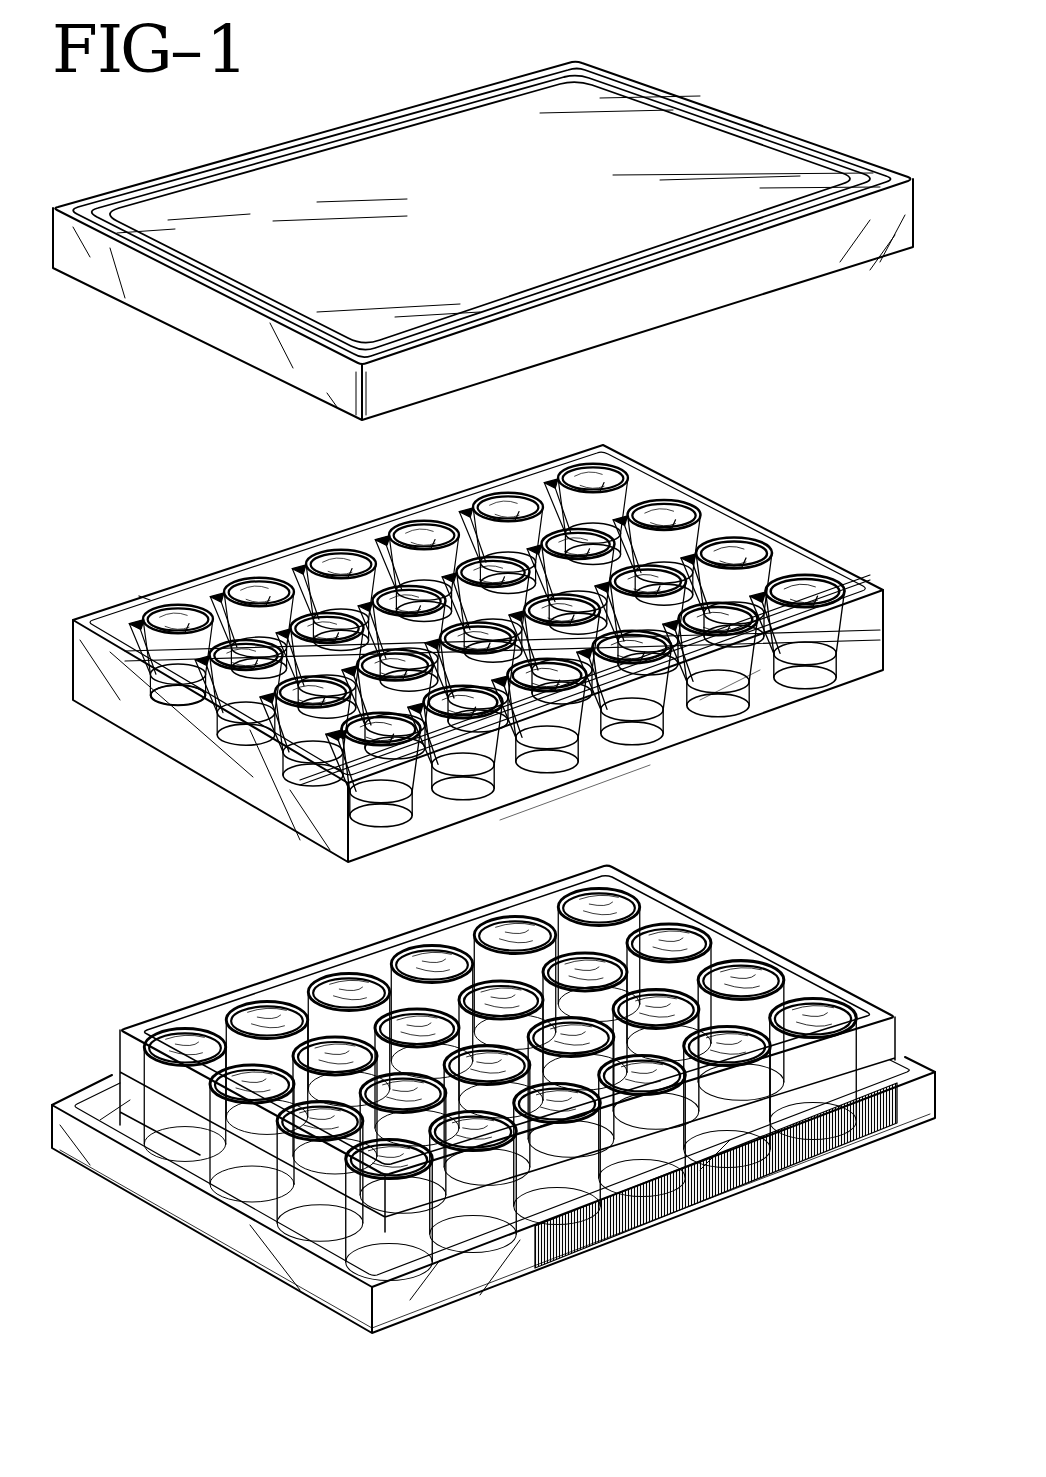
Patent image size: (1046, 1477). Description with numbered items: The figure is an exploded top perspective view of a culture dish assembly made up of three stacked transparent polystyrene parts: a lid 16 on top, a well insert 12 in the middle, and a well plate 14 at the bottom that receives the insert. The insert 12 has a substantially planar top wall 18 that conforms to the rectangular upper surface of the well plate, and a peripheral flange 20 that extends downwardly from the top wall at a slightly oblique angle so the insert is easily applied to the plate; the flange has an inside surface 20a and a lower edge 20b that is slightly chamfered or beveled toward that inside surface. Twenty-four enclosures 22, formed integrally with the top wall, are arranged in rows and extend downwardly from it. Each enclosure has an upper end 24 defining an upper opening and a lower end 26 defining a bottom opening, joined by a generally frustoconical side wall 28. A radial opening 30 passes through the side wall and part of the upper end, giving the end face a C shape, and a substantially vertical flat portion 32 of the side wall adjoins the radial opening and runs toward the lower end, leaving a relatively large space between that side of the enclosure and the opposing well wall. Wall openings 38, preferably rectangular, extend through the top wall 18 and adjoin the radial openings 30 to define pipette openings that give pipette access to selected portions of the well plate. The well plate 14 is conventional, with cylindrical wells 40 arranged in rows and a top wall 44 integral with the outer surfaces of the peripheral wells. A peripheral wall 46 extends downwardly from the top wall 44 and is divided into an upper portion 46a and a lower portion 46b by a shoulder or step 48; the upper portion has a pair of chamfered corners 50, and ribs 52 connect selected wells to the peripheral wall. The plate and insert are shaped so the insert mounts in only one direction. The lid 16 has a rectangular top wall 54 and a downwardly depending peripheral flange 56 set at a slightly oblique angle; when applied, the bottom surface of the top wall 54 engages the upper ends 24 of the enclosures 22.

The well insert 12 is at (460, 648).
The well plate 14 is at (465, 1067).
The lid 16 is at (483, 241).
The top wall 18 is at (363, 542).
The peripheral flange 20 is at (478, 653).
The inside surface 20a is at (715, 725).
The lower edge 20b is at (665, 760).
The enclosures 22 is at (517, 505).
The upper end 24 is at (273, 572).
The lower end 26 is at (215, 748).
The side wall 28 is at (183, 712).
The radial opening 30 is at (149, 622).
The flat portion 32 is at (410, 562).
The wall openings 38 is at (232, 598).
The wells 40 is at (270, 1018).
The top wall 44 is at (545, 890).
The peripheral wall 46 is at (476, 1195).
The upper portion 46a is at (187, 1180).
The lower portion 46b is at (267, 1250).
The shoulder or step 48 is at (240, 1203).
The chamfered corners 50 is at (115, 1035).
The ribs 52 is at (680, 1190).
The top wall 54 is at (352, 165).
The peripheral flange 56 is at (185, 312).